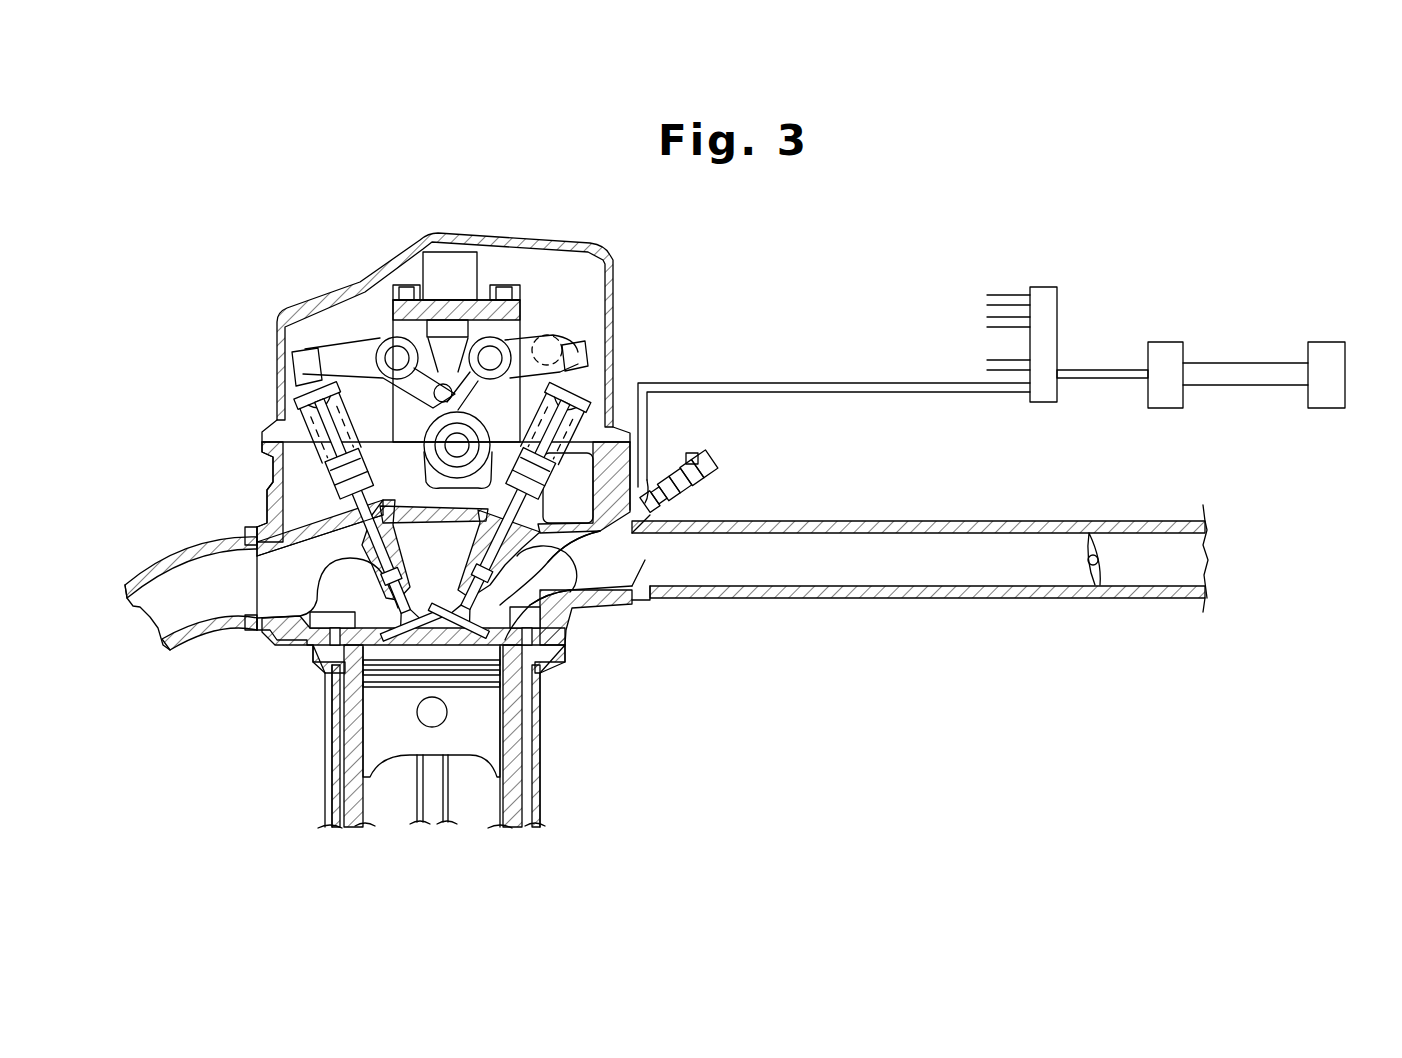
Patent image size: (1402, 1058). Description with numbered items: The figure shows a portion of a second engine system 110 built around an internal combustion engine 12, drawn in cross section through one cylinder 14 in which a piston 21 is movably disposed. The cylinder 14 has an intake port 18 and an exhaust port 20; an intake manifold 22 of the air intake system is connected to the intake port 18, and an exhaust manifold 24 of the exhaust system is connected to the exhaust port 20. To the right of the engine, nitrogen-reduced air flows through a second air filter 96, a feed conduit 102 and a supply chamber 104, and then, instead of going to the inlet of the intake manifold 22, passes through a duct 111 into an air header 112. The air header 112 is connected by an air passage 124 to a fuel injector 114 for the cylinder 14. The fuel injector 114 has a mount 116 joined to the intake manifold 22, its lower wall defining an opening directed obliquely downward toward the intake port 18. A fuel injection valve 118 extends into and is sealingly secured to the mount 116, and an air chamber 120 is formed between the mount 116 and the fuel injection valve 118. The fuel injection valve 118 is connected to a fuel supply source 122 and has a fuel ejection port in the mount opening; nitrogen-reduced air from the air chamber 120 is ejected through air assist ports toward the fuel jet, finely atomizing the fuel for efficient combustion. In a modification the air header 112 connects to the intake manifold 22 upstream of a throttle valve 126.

The internal combustion engine 12 is at (331, 223).
The cylinder 14 is at (390, 782).
The intake port 18 is at (593, 570).
The exhaust port 20 is at (278, 587).
The piston 21 is at (478, 740).
The intake manifold 22 is at (867, 520).
The exhaust manifold 24 is at (188, 550).
The second air filter 96 is at (1322, 352).
The feed conduit 102 is at (1236, 378).
The supply chamber 104 is at (1170, 355).
The second engine system 110 is at (916, 273).
The duct 111 is at (1083, 367).
The air header 112 is at (1060, 310).
The fuel injector 114 is at (684, 438).
The mount 116 is at (663, 520).
The fuel injection valve 118 is at (700, 462).
The air chamber 120 is at (648, 485).
The fuel supply source 122 is at (736, 467).
The air passage 124 is at (850, 383).
The throttle valve 126 is at (1098, 560).